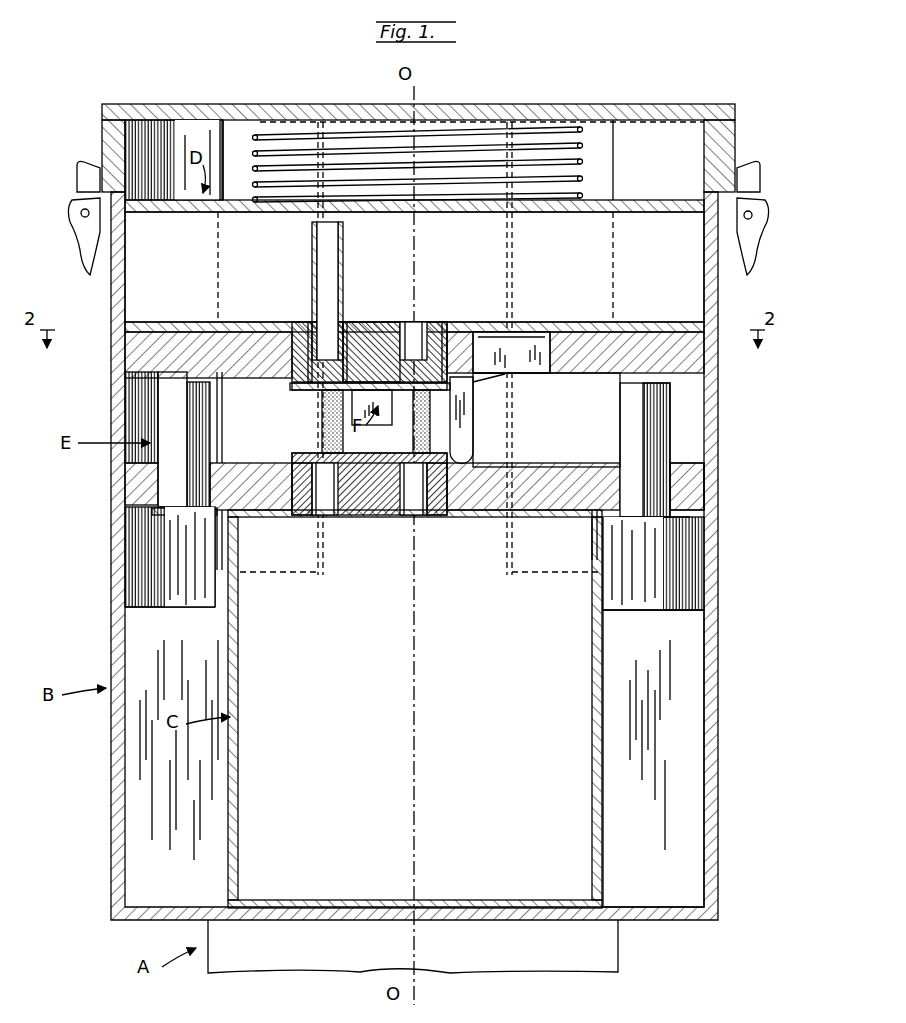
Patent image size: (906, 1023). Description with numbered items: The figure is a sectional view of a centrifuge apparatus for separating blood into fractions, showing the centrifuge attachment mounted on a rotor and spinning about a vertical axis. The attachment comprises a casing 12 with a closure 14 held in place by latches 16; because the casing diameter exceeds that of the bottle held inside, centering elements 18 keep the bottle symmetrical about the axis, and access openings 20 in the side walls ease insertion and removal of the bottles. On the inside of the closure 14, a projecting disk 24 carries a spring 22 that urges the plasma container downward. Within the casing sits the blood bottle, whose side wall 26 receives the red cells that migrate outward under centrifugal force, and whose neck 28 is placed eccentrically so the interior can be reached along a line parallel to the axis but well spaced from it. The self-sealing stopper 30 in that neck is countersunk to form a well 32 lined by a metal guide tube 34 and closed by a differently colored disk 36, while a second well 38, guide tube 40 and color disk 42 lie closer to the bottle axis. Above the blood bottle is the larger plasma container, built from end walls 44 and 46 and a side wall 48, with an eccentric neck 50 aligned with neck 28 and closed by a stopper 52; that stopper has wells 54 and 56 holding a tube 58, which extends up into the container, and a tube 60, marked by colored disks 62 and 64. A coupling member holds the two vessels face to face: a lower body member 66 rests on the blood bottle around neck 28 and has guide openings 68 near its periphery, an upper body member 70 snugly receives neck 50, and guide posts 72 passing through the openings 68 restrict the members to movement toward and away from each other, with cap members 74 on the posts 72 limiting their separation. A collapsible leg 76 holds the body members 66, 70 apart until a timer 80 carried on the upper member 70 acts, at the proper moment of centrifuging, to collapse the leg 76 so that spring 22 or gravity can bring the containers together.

The casing 12 is at (112, 632).
The closure 14 is at (637, 104).
The latches 16 is at (80, 180).
The centering elements 18 is at (634, 745).
The access openings 20 is at (527, 452).
The spring 22 is at (585, 162).
The projecting disk 24 is at (275, 138).
The side wall 26 is at (240, 695).
The neck 28 is at (272, 463).
The stopper 30 is at (375, 517).
The well 32 is at (326, 517).
The guide tube 34 is at (305, 517).
The disk 36 is at (322, 452).
The well 38 is at (413, 517).
The guide tube 40 is at (437, 517).
The color disk 42 is at (405, 453).
The end wall 44 is at (447, 212).
The end wall 46 is at (520, 330).
The side wall 48 is at (128, 290).
The neck 50 is at (295, 372).
The stopper 52 is at (370, 325).
The well 54 is at (312, 340).
The well 56 is at (445, 328).
The tube 58 is at (343, 262).
The tube 60 is at (420, 335).
The colored disk 62 is at (315, 387).
The colored disk 64 is at (415, 392).
The lower body member 66 is at (692, 517).
The guide openings 68 is at (152, 492).
The upper body member 70 is at (580, 375).
The guide posts 72 is at (187, 417).
The cap members 74 is at (205, 518).
The collapsible leg 76 is at (470, 440).
The timer 80 is at (540, 345).